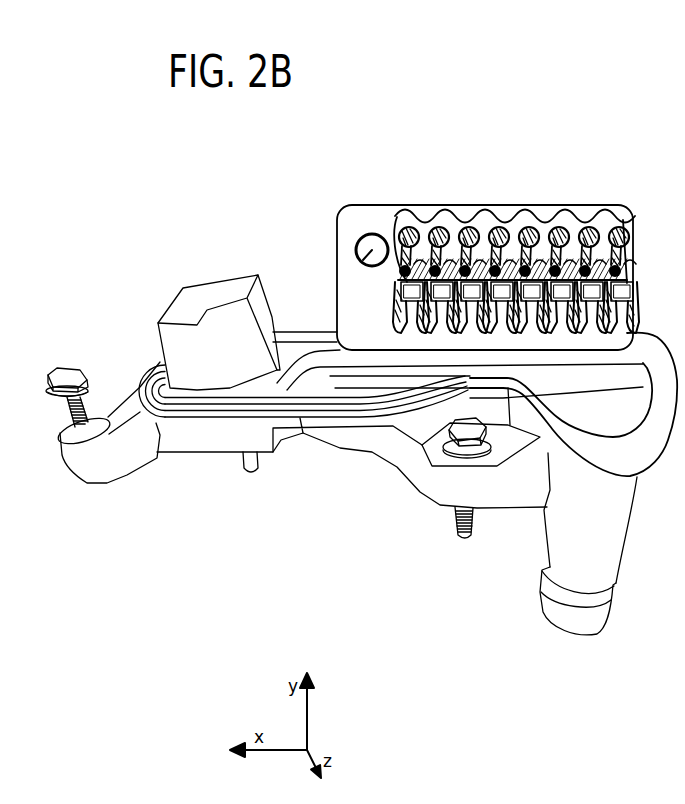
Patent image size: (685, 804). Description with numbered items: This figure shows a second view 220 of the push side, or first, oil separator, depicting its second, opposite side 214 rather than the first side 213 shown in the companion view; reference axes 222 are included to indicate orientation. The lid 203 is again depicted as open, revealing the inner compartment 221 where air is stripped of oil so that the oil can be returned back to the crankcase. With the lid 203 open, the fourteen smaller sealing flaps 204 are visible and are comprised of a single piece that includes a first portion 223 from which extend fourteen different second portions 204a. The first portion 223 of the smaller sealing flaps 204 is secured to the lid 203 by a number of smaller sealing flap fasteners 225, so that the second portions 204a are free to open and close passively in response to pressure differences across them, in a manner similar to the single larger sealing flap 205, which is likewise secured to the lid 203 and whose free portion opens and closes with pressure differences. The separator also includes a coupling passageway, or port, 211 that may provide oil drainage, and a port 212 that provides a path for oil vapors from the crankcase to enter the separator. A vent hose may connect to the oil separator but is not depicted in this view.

The second view 220 is at (622, 82).
The lid 203 is at (390, 210).
The smaller sealing flaps 204 is at (494, 212).
The second portions 204a is at (410, 232).
The larger sealing flap 205 is at (362, 264).
The coupling passageway 211 is at (573, 618).
The port 212 is at (192, 315).
The first side 213 is at (296, 256).
The second side 214 is at (474, 492).
The inner compartment 221 is at (619, 369).
The reference axes 222 is at (380, 680).
The first portion 223 is at (613, 262).
The smaller sealing flap fasteners 225 is at (548, 247).